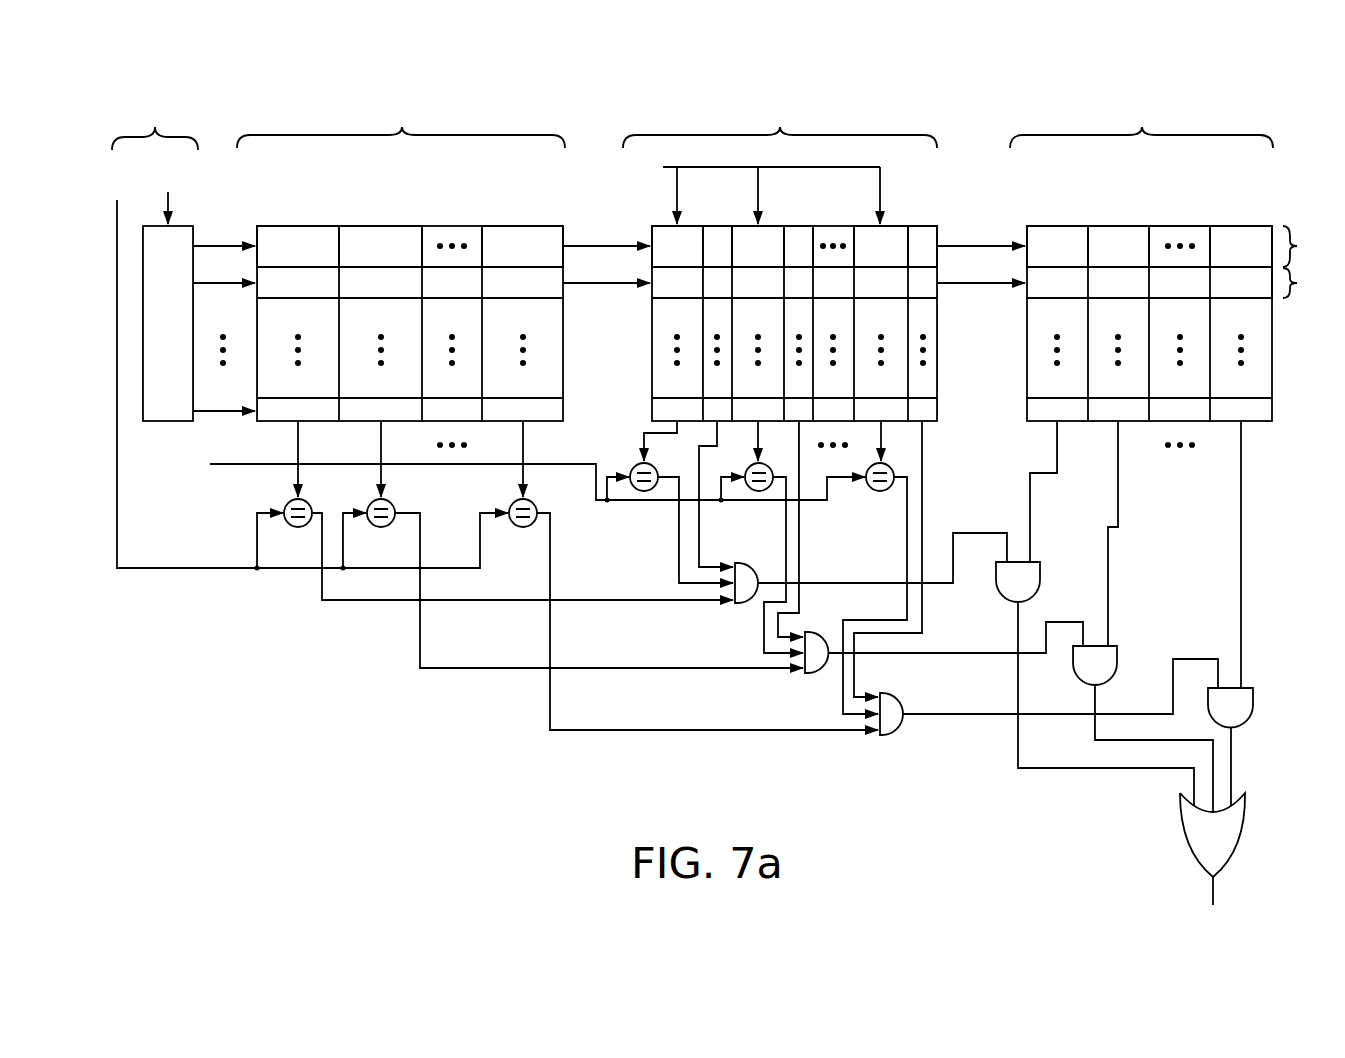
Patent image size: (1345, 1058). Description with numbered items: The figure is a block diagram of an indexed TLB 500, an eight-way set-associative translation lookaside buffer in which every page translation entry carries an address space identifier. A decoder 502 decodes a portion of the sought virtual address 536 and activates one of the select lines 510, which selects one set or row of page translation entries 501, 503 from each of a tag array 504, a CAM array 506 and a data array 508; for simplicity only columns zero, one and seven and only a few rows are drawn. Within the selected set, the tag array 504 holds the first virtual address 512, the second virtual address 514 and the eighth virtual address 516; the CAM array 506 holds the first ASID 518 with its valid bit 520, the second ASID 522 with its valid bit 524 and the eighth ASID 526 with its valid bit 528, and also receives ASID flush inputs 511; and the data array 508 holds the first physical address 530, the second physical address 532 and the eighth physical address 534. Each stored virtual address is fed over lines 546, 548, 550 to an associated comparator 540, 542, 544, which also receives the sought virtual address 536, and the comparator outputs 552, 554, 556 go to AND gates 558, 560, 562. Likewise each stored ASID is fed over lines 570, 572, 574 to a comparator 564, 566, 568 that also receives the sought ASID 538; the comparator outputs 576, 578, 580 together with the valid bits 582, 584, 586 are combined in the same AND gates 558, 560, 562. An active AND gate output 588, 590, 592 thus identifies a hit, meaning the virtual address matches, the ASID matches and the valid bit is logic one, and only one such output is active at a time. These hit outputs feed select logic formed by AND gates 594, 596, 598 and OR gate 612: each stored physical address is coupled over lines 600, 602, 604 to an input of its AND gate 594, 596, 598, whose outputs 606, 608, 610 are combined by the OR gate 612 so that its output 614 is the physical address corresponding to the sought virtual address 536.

The indexed TLB 500 is at (306, 694).
The page translation entry 501 is at (1186, 246).
The decoder 502 is at (186, 226).
The page translation entry 503 is at (1186, 282).
The tag array 504 is at (443, 265).
The CAM array 506 is at (824, 265).
The data array 508 is at (1141, 265).
The select lines 510 is at (207, 411).
The ASID flush inputs 511 is at (749, 182).
The virtual address 0 512 is at (298, 226).
The virtual address 1 514 is at (381, 226).
The virtual address 7 516 is at (523, 226).
The ASID0 518 is at (660, 226).
The valid bit V0 520 is at (716, 226).
The ASID1 522 is at (775, 226).
The valid bit V1 524 is at (803, 226).
The ASID7 526 is at (895, 226).
The valid bit V7 528 is at (921, 226).
The physical address PA0 530 is at (1057, 226).
The physical address PA1 532 is at (1118, 226).
The physical address PA7 534 is at (1241, 226).
The sought virtual address 536 is at (137, 605).
The sought ASID 538 is at (223, 466).
The comparator 540 is at (296, 528).
The comparator 542 is at (385, 528).
The comparator 544 is at (523, 528).
The line 546 is at (300, 440).
The line 548 is at (383, 440).
The line 550 is at (525, 440).
The comparator output 552 is at (346, 600).
The comparator output 554 is at (476, 668).
The comparator output 556 is at (637, 731).
The AND gate 558 is at (742, 605).
The AND gate 560 is at (816, 675).
The AND gate 562 is at (900, 735).
The comparator 564 is at (650, 491).
The comparator 566 is at (759, 491).
The comparator 568 is at (880, 491).
The line 570 is at (642, 437).
The line 572 is at (758, 428).
The line 574 is at (885, 427).
The comparator output 576 is at (679, 565).
The comparator output 578 is at (764, 645).
The comparator output 580 is at (876, 620).
The valid bit 582 is at (716, 433).
The valid bit 584 is at (800, 545).
The valid bit 586 is at (924, 460).
The AND gate output 588 is at (975, 532).
The AND gate output 590 is at (968, 653).
The AND gate output 592 is at (1196, 658).
The AND gate 594 is at (1040, 580).
The AND gate 596 is at (1118, 662).
The AND gate 598 is at (1254, 712).
The line 600 is at (1030, 486).
The line 602 is at (1118, 505).
The line 604 is at (1241, 527).
The AND gate output 606 is at (1018, 745).
The AND gate output 608 is at (1098, 705).
The AND gate output 610 is at (1235, 768).
The OR gate 612 is at (1180, 838).
The OR gate output 614 is at (1212, 890).